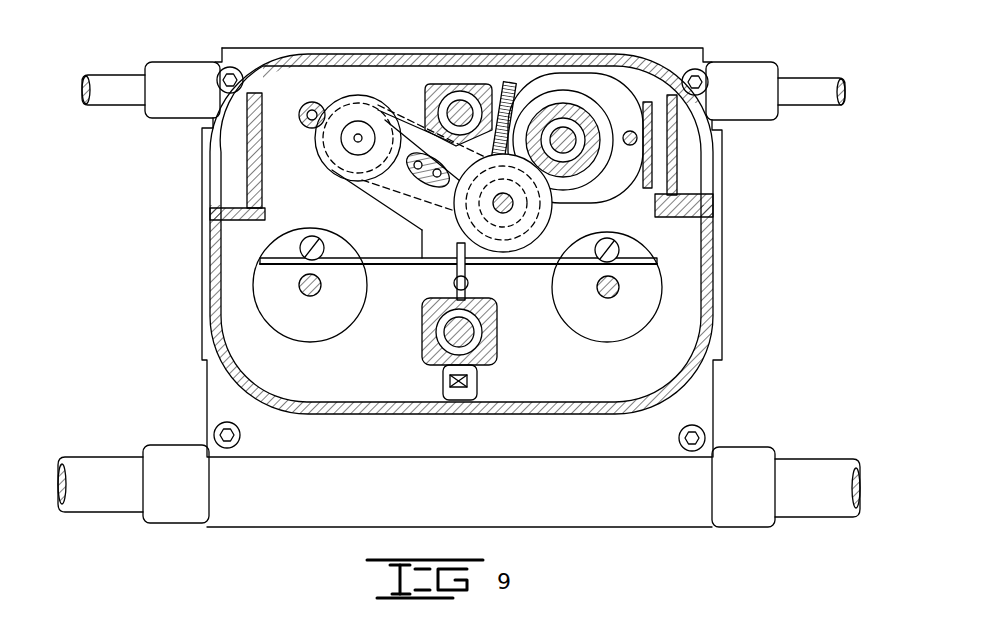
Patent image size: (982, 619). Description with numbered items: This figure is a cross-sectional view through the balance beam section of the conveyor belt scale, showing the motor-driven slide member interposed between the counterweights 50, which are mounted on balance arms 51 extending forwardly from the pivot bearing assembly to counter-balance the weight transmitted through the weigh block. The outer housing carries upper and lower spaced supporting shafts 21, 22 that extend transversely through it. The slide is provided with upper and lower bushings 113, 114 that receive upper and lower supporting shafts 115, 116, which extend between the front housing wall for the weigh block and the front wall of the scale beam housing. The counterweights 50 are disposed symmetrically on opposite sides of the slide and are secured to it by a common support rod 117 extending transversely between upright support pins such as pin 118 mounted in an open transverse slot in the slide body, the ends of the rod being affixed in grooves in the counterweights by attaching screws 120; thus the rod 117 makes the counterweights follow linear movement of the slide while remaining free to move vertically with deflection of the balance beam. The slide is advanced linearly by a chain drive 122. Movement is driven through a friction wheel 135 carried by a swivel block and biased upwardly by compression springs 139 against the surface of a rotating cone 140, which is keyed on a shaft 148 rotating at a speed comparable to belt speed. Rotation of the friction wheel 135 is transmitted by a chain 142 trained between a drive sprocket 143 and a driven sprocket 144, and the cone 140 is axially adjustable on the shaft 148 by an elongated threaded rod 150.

The upper supporting shaft 21 is at (113, 73).
The lower supporting shaft 22 is at (108, 457).
The counterweight 50 is at (281, 333).
The balance arm 51 is at (313, 296).
The upper bushing 113 is at (440, 88).
The lower bushing 114 is at (438, 327).
The upper supporting shaft 115 is at (462, 92).
The lower supporting shaft 116 is at (470, 333).
The common support rod 117 is at (515, 266).
The upright support pin 118 is at (457, 268).
The attaching screw 120 is at (300, 245).
The chain drive 122 is at (470, 380).
The friction wheel 135 is at (550, 212).
The compression spring 139 is at (506, 92).
The rotating cone 140 is at (567, 107).
The chain 142 is at (387, 190).
The drive sprocket 143 is at (472, 210).
The driven sprocket 144 is at (332, 171).
The shaft 148 is at (572, 150).
The elongated threaded rod 150 is at (637, 138).